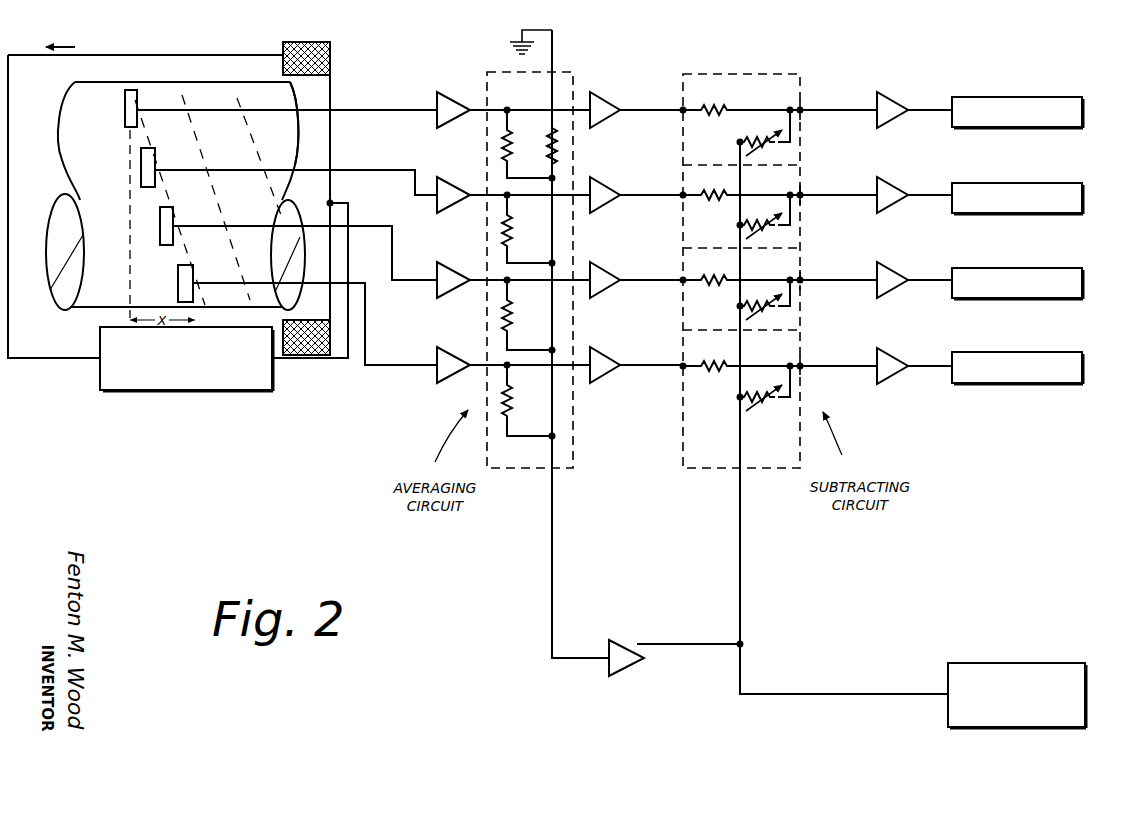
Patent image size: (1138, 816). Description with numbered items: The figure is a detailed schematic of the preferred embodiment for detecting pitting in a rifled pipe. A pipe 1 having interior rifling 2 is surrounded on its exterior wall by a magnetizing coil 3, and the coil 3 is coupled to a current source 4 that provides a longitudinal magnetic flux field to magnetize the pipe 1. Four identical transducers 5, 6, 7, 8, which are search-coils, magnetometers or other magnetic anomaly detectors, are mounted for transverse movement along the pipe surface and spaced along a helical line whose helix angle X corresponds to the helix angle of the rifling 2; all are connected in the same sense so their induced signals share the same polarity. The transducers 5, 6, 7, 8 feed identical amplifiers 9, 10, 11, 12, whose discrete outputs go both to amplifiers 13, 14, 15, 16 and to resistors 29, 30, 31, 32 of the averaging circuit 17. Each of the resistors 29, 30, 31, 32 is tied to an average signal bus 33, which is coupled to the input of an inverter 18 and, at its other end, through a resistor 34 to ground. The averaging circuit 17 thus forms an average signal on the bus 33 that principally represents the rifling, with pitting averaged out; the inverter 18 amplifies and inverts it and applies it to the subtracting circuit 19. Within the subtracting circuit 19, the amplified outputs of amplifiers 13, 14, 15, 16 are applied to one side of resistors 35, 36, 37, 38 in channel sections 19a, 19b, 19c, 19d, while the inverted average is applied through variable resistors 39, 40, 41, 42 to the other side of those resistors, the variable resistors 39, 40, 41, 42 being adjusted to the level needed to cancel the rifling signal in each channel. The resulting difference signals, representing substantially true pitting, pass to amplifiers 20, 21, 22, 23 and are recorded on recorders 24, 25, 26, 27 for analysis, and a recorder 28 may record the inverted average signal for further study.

The pipe 1 is at (177, 82).
The interior rifling 2 is at (277, 238).
The magnetizing coil 3 is at (322, 42).
The current source 4 is at (185, 393).
The transducer 5 is at (140, 101).
The transducer 6 is at (157, 160).
The transducer 7 is at (175, 215).
The transducer 8 is at (190, 282).
The amplifier 9 is at (448, 96).
The amplifier 10 is at (452, 182).
The amplifier 11 is at (464, 266).
The amplifier 12 is at (464, 352).
The amplifier 13 is at (604, 96).
The amplifier 14 is at (604, 182).
The amplifier 15 is at (604, 268).
The amplifier 16 is at (604, 353).
The averaging circuit 17 is at (574, 420).
The inverter 18 is at (612, 640).
The subtracting circuit 19 is at (735, 74).
The subtracting circuit 19a is at (803, 90).
The subtracting circuit 19b is at (803, 177).
The subtracting circuit 19c is at (803, 264).
The subtracting circuit 19d is at (803, 350).
The amplifier 20 is at (891, 96).
The amplifier 21 is at (891, 181).
The amplifier 22 is at (891, 266).
The amplifier 23 is at (891, 351).
The recorder 24 is at (1085, 112).
The recorder 25 is at (1066, 183).
The recorder 26 is at (1066, 268).
The recorder 27 is at (1068, 352).
The recorder 28 is at (1062, 663).
The resistor 29 is at (512, 152).
The resistor 30 is at (512, 237).
The resistor 31 is at (512, 322).
The resistor 32 is at (512, 407).
The average signal bus 33 is at (552, 452).
The resistor 34 is at (560, 145).
The resistor 35 is at (716, 108).
The resistor 36 is at (708, 192).
The resistor 37 is at (708, 277).
The resistor 38 is at (708, 363).
The variable resistor 39 is at (776, 146).
The variable resistor 40 is at (776, 229).
The variable resistor 41 is at (774, 310).
The variable resistor 42 is at (772, 410).